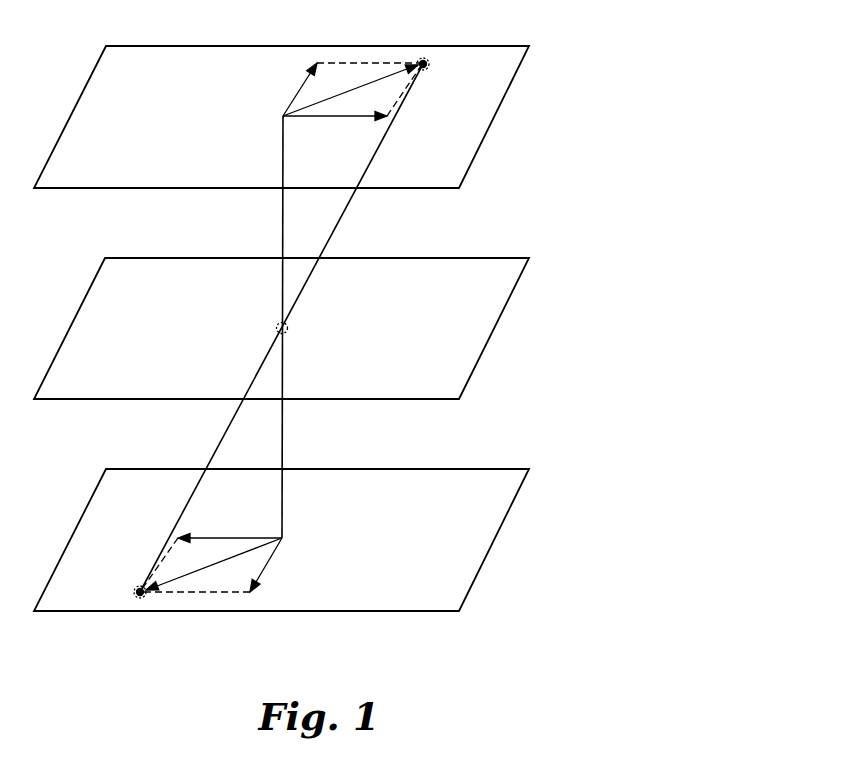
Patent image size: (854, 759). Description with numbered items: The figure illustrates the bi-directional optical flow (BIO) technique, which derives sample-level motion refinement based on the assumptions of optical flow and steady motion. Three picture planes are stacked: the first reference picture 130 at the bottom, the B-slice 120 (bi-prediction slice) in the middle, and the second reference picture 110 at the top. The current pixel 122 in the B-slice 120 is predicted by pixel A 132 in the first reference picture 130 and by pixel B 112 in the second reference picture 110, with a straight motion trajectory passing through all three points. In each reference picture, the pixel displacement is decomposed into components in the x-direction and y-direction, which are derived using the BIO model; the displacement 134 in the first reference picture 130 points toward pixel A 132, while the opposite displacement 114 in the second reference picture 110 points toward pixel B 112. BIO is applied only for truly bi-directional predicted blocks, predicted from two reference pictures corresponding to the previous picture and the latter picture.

The reference picture 1 110 is at (450, 47).
The pixel B 112 is at (418, 62).
The motion vector -V from vertex to point B 114 is at (362, 86).
The B-slice 120 is at (450, 259).
The current pixel 122 is at (288, 328).
The reference picture 0 130 is at (450, 470).
The pixel A 132 is at (138, 596).
The motion vector V from vertex to point A 134 is at (212, 566).